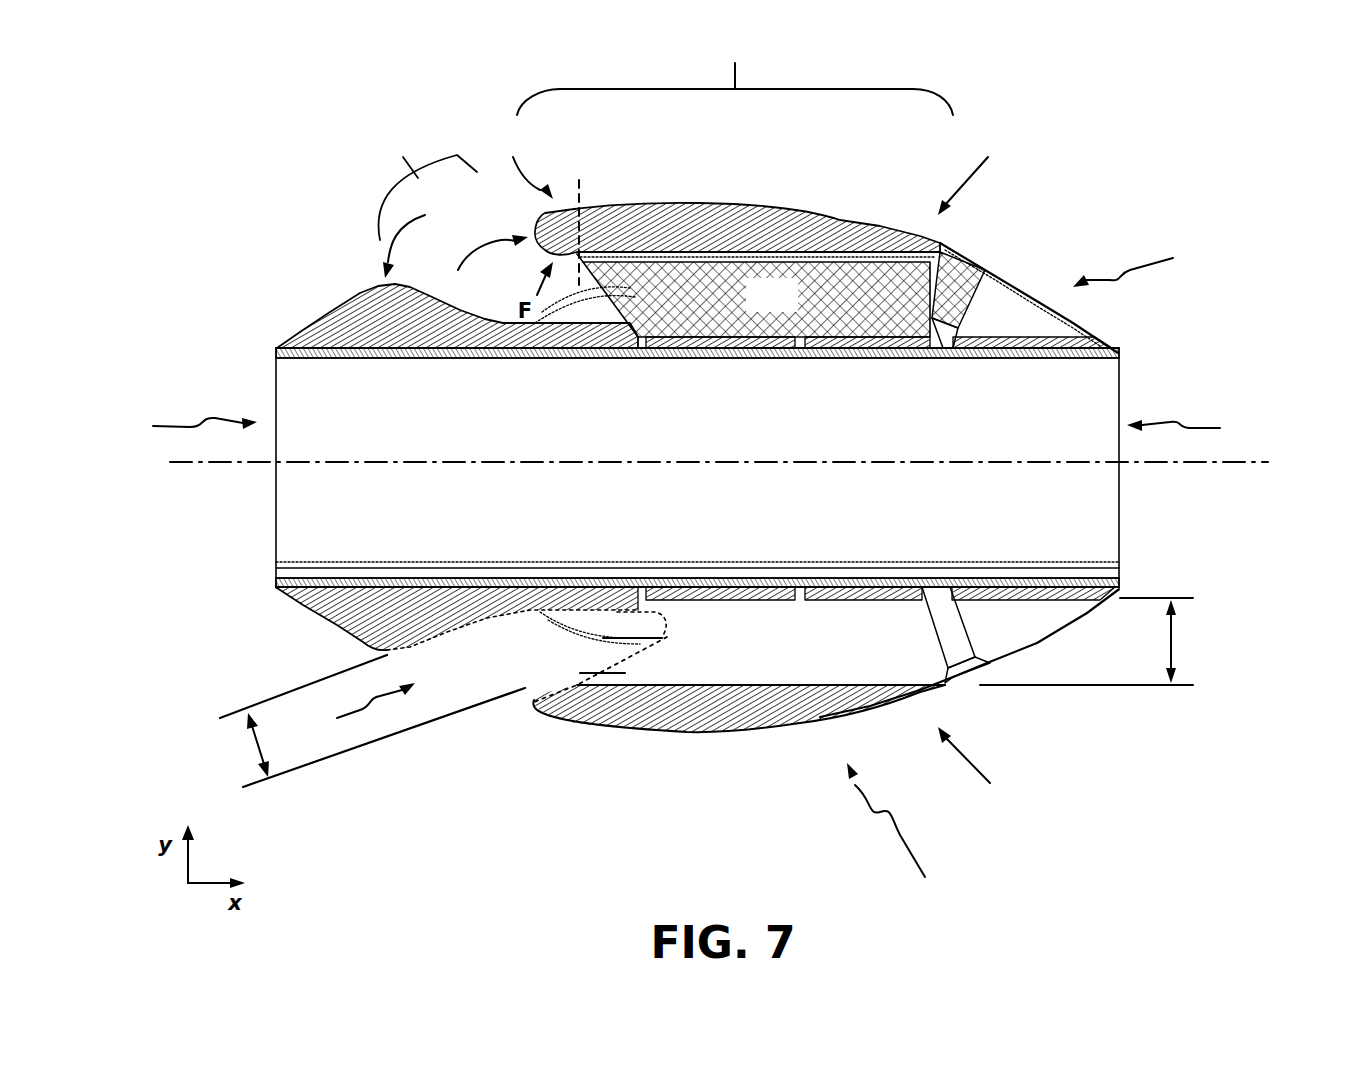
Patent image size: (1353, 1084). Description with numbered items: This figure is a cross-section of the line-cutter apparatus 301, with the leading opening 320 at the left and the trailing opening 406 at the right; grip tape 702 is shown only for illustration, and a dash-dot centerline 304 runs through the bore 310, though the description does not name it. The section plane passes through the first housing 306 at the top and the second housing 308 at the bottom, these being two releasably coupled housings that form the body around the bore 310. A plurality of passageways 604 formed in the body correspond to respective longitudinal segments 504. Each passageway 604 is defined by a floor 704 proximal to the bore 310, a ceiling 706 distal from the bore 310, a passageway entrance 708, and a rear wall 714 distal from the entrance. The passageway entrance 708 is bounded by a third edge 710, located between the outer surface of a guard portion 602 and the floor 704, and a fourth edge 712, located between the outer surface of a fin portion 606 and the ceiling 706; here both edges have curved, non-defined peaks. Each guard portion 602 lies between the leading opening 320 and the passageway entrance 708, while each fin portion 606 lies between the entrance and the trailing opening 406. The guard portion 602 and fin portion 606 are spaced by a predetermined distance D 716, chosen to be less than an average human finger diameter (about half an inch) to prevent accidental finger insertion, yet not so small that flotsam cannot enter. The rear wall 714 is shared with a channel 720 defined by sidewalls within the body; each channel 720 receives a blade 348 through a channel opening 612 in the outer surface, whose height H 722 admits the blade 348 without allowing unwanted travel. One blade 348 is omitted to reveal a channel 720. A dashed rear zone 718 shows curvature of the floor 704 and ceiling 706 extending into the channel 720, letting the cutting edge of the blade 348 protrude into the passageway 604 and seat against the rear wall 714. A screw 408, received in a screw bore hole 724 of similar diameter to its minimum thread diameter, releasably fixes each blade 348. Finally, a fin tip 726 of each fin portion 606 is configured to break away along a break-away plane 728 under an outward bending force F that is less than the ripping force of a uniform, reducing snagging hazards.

The line-cutter apparatus 301 is at (899, 833).
The central axis 304 is at (1162, 463).
The first housing 306 is at (835, 207).
The second housing 308 is at (635, 727).
The bore 310 is at (697, 469).
The leading opening 320 is at (182, 424).
The blade 348 is at (753, 295).
The trailing opening 406 is at (1204, 424).
The screw 408 is at (967, 282).
The longitudinal segment 504 is at (975, 472).
The guard portion 602 is at (340, 307).
The passageway 604 is at (425, 186).
The fin portion 606 is at (735, 76).
The channel opening 612 is at (1155, 262).
The grip tape 702 is at (1122, 352).
The floor 704 is at (448, 630).
The ceiling 706 is at (562, 678).
The passageway entrance 708 is at (354, 707).
The third edge 710 is at (419, 239).
The fourth edge 712 is at (480, 264).
The rear wall 714 is at (582, 672).
The predetermined distance D 716 is at (257, 748).
The rear zone 718 is at (672, 623).
The channel 720 is at (882, 480).
The height H 722 is at (1175, 641).
The screw bore hole 724 is at (935, 632).
The fin tip 726 is at (522, 163).
The break-away plane 728 is at (578, 197).